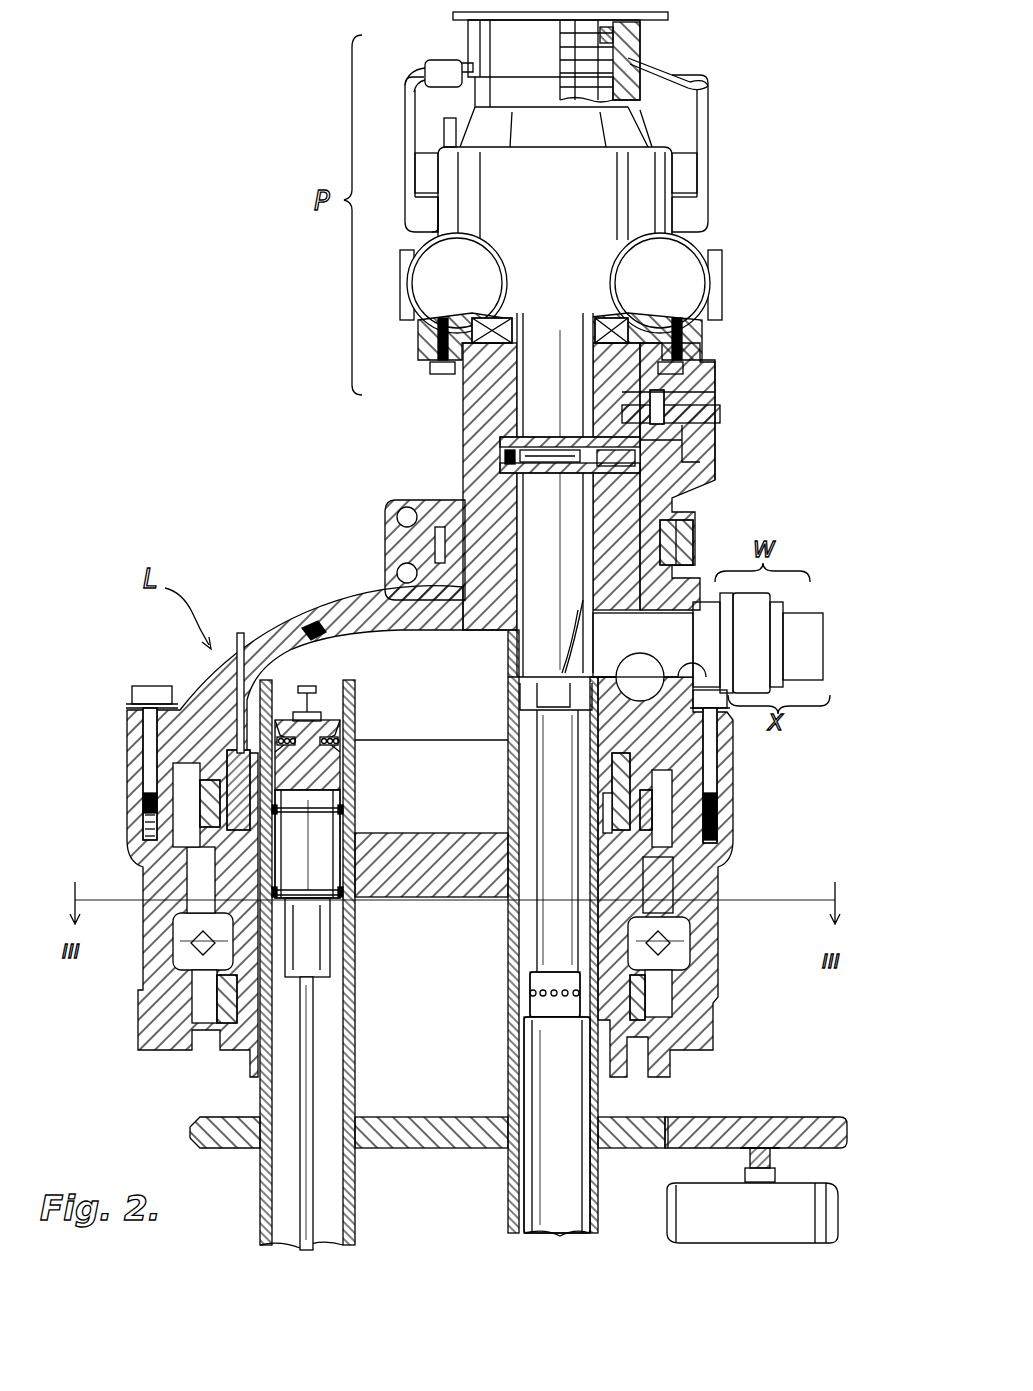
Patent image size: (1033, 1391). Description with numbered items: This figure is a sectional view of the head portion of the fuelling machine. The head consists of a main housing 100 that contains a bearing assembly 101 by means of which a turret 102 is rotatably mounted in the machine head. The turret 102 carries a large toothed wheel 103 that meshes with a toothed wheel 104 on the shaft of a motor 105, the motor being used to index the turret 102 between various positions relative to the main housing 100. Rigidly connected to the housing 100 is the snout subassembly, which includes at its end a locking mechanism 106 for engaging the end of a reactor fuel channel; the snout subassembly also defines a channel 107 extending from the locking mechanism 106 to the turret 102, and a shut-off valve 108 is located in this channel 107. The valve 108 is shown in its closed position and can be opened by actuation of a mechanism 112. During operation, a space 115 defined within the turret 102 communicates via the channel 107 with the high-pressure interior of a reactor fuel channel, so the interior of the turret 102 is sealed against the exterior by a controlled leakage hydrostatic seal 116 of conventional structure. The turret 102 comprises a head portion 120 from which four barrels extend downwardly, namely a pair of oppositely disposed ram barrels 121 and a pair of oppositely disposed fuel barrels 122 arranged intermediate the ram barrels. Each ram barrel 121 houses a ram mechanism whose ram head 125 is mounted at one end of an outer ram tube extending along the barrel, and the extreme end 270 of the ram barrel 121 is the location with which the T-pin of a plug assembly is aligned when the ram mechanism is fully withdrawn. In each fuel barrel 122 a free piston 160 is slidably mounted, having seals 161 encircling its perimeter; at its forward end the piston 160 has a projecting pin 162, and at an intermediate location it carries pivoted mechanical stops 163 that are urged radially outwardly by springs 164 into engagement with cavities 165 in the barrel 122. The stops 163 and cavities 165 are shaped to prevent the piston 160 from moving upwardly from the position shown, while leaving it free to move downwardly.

The main housing 100 is at (312, 630).
The bearing assembly 101 is at (200, 943).
The turret 102 is at (637, 873).
The large toothed wheel 103 is at (634, 1140).
The toothed wheel 104 is at (743, 1133).
The motor 105 is at (688, 1214).
The locking mechanism 106 is at (642, 46).
The channel 107 is at (536, 380).
The shut-off valve 108 is at (512, 463).
The mechanism 112 is at (673, 433).
The space 115 is at (413, 640).
The controlled leakage hydrostatic seal 116 is at (248, 812).
The head portion 120 is at (462, 892).
The ram barrel 121 is at (512, 1100).
The fuel barrel 122 is at (352, 1055).
The ram head 125 is at (535, 1040).
The free piston 160 is at (312, 830).
The seals 161 is at (348, 808).
The projecting pin 162 is at (305, 690).
The pivoted mechanical stops 163 is at (348, 760).
The springs 164 is at (342, 732).
The cavities 165 is at (350, 744).
The extreme end 270 is at (508, 677).